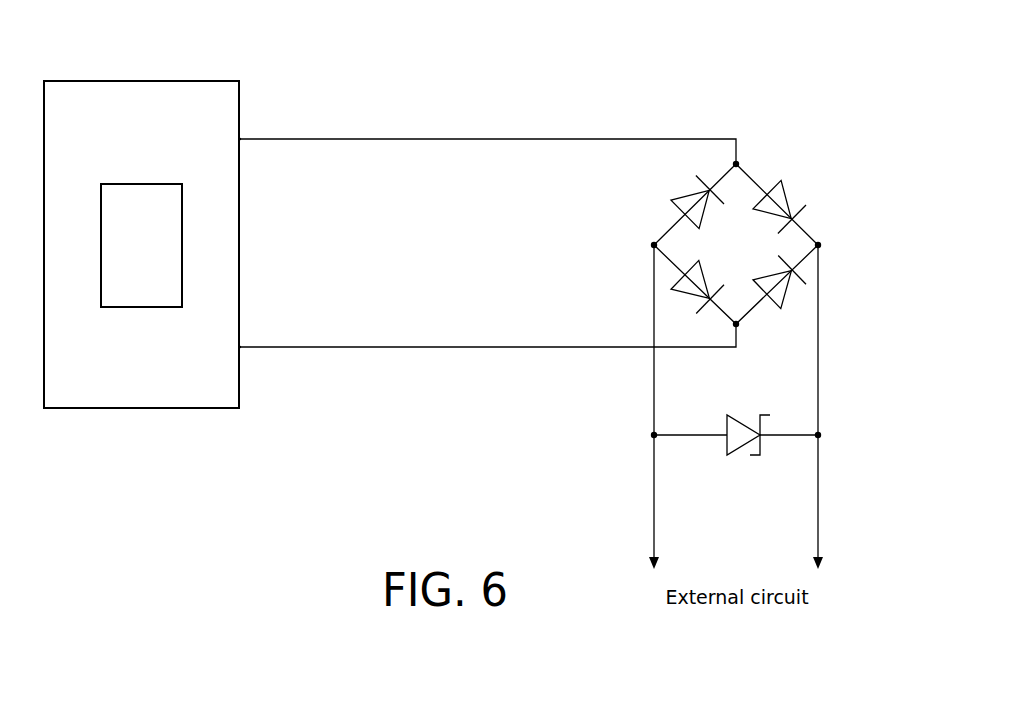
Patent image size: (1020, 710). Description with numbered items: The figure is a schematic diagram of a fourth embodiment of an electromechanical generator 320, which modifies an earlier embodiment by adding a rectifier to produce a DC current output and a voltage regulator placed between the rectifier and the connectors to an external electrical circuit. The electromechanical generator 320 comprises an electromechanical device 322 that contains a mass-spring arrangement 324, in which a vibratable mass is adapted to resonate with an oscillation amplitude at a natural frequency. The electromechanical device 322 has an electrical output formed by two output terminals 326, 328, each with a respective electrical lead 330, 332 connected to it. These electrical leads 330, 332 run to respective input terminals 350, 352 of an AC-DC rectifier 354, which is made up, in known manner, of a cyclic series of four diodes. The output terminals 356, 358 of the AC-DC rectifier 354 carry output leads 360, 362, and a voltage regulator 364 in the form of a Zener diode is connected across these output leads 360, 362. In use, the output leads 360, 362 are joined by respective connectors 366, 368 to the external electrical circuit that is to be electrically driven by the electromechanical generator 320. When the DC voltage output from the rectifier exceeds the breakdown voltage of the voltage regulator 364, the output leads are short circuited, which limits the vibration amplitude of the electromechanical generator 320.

The electromechanical generator 320 is at (313, 430).
The electromechanical device 322 is at (178, 80).
The mass-spring arrangement 324 is at (153, 183).
The output terminal 326 is at (241, 138).
The output terminal 328 is at (241, 348).
The electrical lead 330 is at (435, 139).
The electrical lead 332 is at (430, 348).
The input terminal 350 is at (739, 163).
The input terminal 352 is at (739, 325).
The AC-DC rectifier 354 is at (804, 227).
The output terminal 356 is at (651, 245).
The output terminal 358 is at (821, 245).
The output lead 360 is at (652, 496).
The output lead 362 is at (820, 492).
The voltage regulator 364 is at (735, 456).
The connector 366 is at (642, 560).
The connector 368 is at (830, 560).